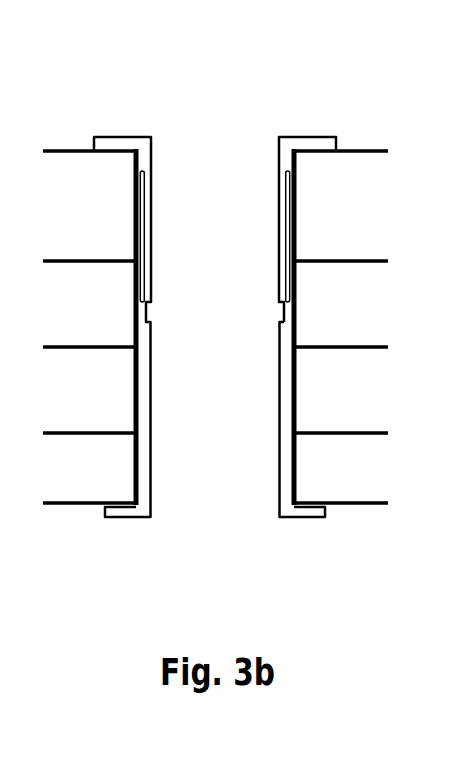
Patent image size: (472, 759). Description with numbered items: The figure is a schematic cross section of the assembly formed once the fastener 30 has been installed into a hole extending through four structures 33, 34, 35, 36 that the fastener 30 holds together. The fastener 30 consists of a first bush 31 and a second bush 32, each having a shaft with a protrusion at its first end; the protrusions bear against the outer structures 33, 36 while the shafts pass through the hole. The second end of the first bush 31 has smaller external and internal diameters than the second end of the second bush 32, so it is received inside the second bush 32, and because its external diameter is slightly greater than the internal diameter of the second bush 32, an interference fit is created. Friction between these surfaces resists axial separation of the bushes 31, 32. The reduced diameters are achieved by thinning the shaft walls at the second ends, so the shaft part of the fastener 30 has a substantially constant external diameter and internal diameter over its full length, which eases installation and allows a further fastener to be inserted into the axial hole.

The fastener 30 is at (222, 92).
The first bush 31 is at (297, 138).
The second bush 32 is at (290, 509).
The structure 33 is at (327, 218).
The structure 34 is at (327, 310).
The structure 35 is at (327, 404).
The structure 36 is at (327, 478).